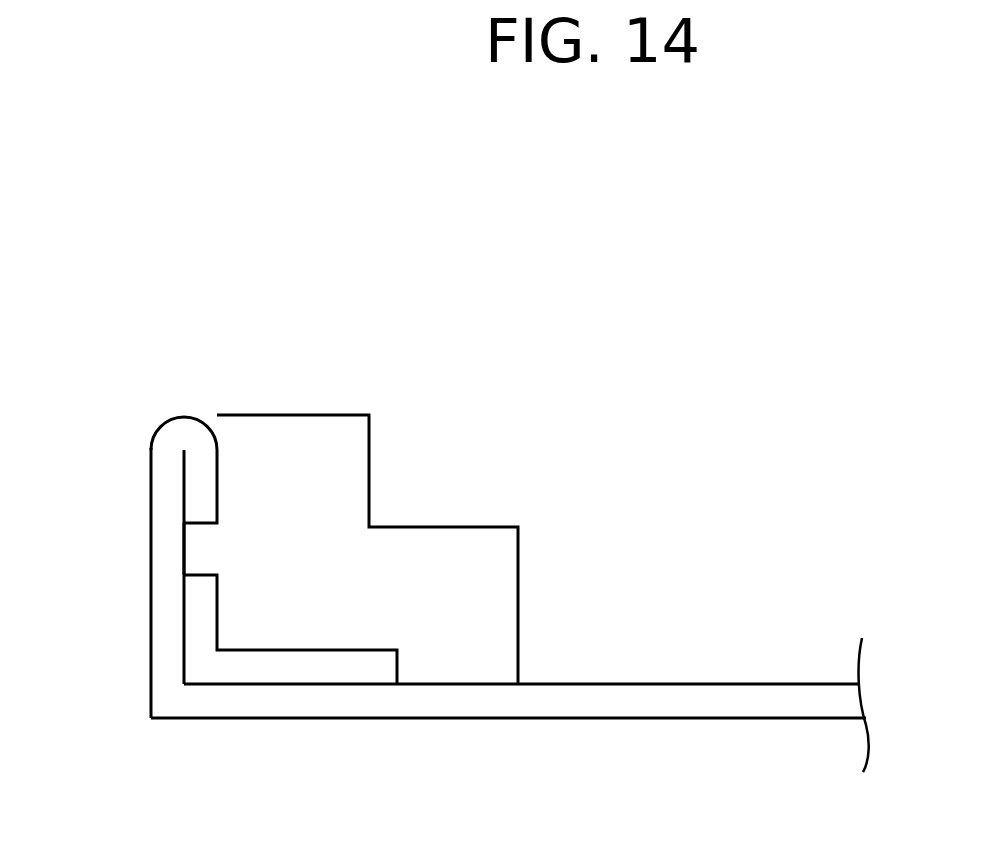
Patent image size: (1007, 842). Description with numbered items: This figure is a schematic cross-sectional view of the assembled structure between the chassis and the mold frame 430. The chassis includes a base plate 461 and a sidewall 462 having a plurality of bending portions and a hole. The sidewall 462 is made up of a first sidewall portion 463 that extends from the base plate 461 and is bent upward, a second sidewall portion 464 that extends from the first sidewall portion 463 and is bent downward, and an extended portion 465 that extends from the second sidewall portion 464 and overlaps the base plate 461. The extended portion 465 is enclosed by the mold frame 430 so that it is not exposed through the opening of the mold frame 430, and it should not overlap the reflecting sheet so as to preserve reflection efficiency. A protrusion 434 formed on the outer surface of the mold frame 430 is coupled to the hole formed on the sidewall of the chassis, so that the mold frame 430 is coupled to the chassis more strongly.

The mold frame 430 is at (294, 437).
The protrusion 434 is at (205, 552).
The base plate 461 is at (470, 700).
The sidewall 462 is at (172, 388).
The first sidewall portion 463 is at (168, 626).
The second sidewall portion 464 is at (207, 498).
The extended portion 465 is at (276, 665).